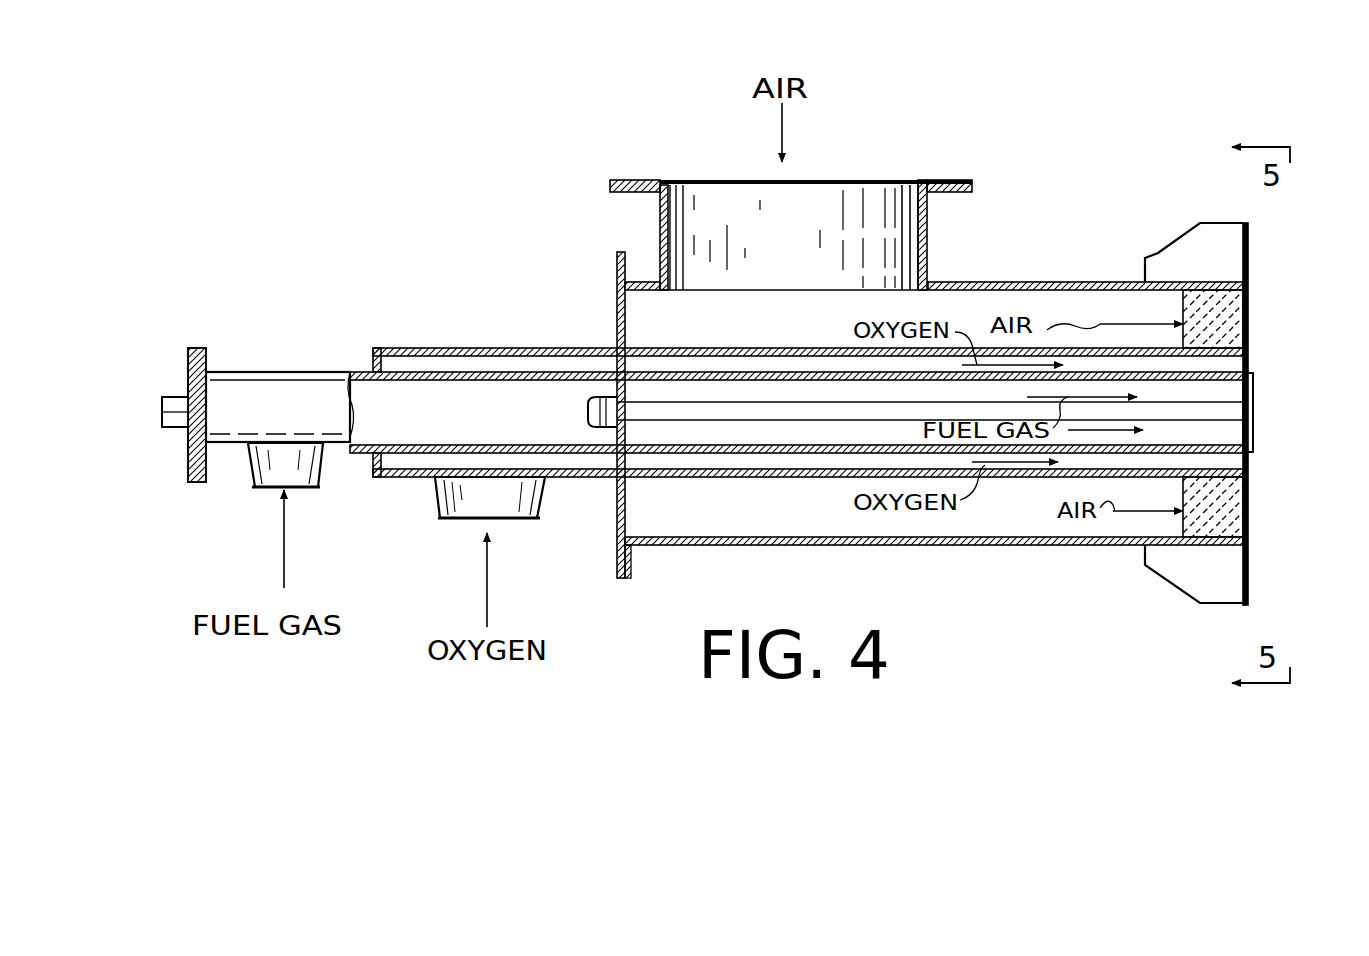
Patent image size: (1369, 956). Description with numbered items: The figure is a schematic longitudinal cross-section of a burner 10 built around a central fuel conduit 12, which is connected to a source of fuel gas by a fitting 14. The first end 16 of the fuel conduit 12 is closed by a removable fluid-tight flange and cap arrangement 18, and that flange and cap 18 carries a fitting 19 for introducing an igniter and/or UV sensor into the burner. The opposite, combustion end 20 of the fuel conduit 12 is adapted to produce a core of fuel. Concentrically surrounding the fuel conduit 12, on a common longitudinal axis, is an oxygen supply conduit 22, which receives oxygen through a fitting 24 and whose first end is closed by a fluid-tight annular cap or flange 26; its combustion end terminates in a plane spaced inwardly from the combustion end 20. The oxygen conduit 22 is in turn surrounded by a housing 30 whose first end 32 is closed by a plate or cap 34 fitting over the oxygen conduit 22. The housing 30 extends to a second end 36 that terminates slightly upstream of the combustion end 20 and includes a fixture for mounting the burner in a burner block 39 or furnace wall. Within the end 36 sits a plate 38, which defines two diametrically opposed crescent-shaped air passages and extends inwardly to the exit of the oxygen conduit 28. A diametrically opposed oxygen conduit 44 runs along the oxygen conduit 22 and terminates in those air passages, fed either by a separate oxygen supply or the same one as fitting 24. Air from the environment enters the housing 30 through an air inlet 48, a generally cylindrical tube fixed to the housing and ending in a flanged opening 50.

The burner 10 is at (452, 312).
The central fuel conduit 12 is at (276, 365).
The fitting 14 is at (322, 488).
The first end 16 is at (213, 482).
The flange and cap arrangement 18 is at (186, 360).
The fitting 19 is at (162, 420).
The combustion end 20 is at (1257, 397).
The oxygen supply conduit 22 is at (512, 344).
The fitting 24 is at (537, 505).
The annular cap or flange 26 is at (372, 363).
The exit of the oxygen conduit 28 is at (1160, 350).
The housing 30 is at (1080, 280).
The first end 32 is at (635, 272).
The plate or cap 34 is at (616, 254).
The second end 36 is at (1246, 286).
The plate 38 is at (1227, 498).
The burner block 39 is at (1158, 253).
The oxygen conduit 44 is at (727, 422).
The air inlet 48 is at (935, 228).
The flanged opening 50 is at (940, 180).